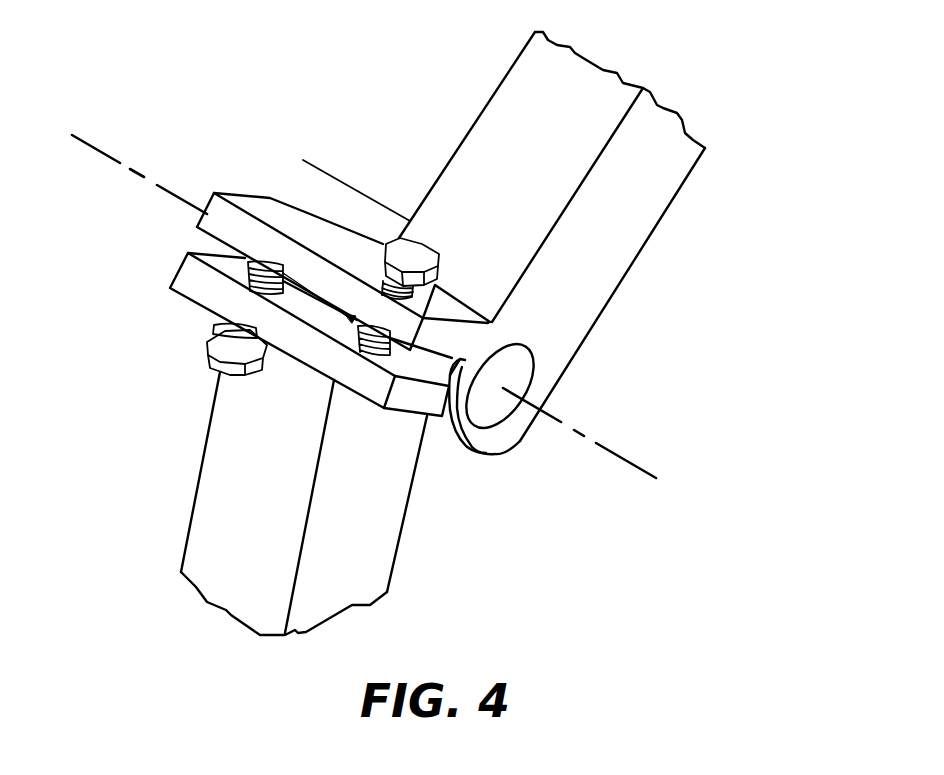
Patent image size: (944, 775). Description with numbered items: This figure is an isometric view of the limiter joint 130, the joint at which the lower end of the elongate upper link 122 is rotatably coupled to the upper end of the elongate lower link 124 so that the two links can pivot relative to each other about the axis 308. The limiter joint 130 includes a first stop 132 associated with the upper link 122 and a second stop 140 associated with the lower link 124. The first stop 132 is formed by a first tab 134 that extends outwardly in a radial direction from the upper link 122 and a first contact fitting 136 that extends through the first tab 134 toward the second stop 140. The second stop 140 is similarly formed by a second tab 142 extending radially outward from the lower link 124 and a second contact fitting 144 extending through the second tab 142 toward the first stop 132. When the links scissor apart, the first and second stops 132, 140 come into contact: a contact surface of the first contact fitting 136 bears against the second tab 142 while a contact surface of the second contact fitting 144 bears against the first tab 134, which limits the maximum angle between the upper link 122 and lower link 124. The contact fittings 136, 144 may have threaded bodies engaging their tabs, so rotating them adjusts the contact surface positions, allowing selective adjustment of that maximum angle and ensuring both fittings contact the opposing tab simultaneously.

The upper link 122 is at (655, 212).
The lower link 124 is at (392, 513).
The limiter joint 130 is at (607, 360).
The first stop 132 is at (333, 253).
The first tab 134 is at (206, 204).
The first contact fitting 136 is at (417, 250).
The second stop 140 is at (214, 290).
The second tab 142 is at (187, 270).
The second contact fitting 144 is at (220, 350).
The axis 308 is at (610, 449).